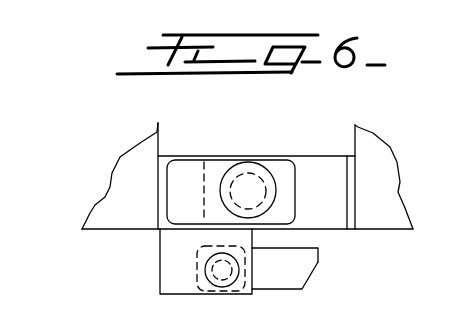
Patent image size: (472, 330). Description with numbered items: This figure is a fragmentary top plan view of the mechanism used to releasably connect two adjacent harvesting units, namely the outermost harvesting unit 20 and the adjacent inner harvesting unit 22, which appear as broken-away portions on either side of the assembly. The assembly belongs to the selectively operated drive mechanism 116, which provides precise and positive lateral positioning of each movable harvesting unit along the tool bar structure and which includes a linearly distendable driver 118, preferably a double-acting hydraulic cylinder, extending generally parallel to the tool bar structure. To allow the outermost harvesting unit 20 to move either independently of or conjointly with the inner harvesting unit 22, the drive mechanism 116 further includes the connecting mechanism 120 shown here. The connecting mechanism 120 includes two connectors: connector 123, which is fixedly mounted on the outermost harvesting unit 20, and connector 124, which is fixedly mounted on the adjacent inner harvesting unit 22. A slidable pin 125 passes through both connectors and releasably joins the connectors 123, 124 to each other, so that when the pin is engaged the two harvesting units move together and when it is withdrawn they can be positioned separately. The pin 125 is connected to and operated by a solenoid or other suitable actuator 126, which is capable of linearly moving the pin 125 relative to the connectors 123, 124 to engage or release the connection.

The outermost harvesting unit 20 is at (123, 190).
The inner harvesting unit 22 is at (378, 186).
The drive mechanism 116 is at (318, 260).
The driver 118 is at (280, 268).
The connecting mechanism 120 is at (279, 152).
The connector 123 is at (180, 170).
The connector 124 is at (327, 166).
The slidable pin 125 is at (232, 203).
The actuator 126 is at (240, 185).